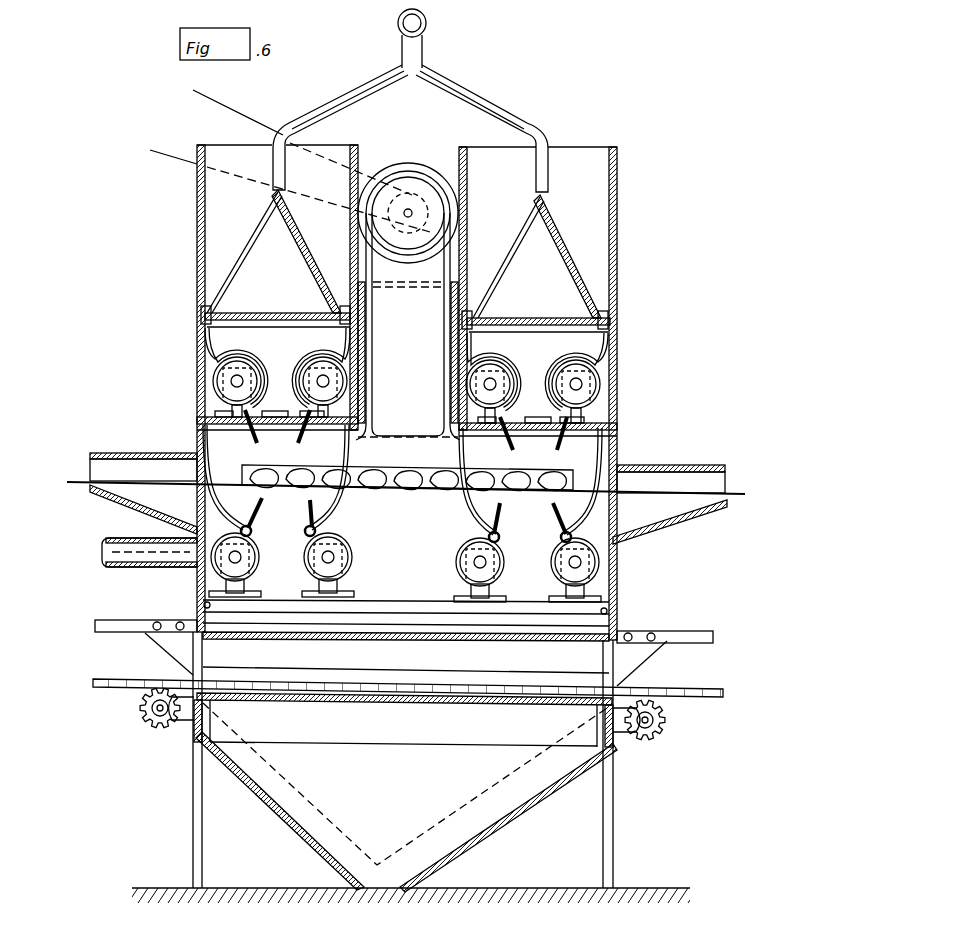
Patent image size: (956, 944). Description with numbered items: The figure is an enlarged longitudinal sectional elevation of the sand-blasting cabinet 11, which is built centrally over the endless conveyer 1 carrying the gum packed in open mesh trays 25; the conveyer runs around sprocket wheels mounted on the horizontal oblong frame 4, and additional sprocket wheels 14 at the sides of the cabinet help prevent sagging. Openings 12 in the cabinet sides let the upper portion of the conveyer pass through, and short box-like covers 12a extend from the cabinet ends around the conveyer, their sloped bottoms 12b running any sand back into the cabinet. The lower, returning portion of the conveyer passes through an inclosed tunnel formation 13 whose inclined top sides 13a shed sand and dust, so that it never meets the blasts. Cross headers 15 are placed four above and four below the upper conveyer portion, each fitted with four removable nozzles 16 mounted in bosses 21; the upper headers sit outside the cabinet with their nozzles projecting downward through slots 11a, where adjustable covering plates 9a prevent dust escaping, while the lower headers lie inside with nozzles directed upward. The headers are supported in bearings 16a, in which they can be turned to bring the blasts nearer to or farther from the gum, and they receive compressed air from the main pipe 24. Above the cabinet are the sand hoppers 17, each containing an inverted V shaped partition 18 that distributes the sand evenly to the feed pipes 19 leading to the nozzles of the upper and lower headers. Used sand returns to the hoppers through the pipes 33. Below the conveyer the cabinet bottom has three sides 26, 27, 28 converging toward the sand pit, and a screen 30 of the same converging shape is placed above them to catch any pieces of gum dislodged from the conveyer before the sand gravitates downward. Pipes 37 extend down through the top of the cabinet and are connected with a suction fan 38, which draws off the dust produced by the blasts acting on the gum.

The endless conveyer 1 is at (80, 482).
The horizontal oblong frame 4 is at (132, 628).
The adjustable covering plates 9a is at (290, 417).
The cabinet 11 is at (193, 607).
The slots 11a is at (240, 430).
The openings 12 is at (172, 468).
The box-like covers 12a is at (160, 452).
The bottoms 12b is at (142, 512).
The tunnel formation 13 is at (403, 702).
The top sides of the tunnel formation 13a is at (406, 652).
The sprocket wheels 14 is at (147, 722).
The headers 15 is at (222, 365).
The nozzles 16 is at (297, 443).
The bearings 16a is at (228, 405).
The sand hoppers 17 is at (217, 148).
The inverted V shaped partition 18 is at (291, 232).
The feed pipes 19 is at (307, 347).
The bosses 21 is at (249, 529).
The main pipe 24 is at (120, 567).
The trays 25 is at (405, 468).
The side of the cabinet bottom 26 is at (278, 828).
The side of the cabinet bottom 27 is at (492, 832).
The side of the cabinet bottom 28 is at (403, 761).
The screen 30 is at (320, 812).
The pipes 33 is at (450, 95).
The pipes 37 is at (408, 326).
The suction fan 38 is at (420, 165).